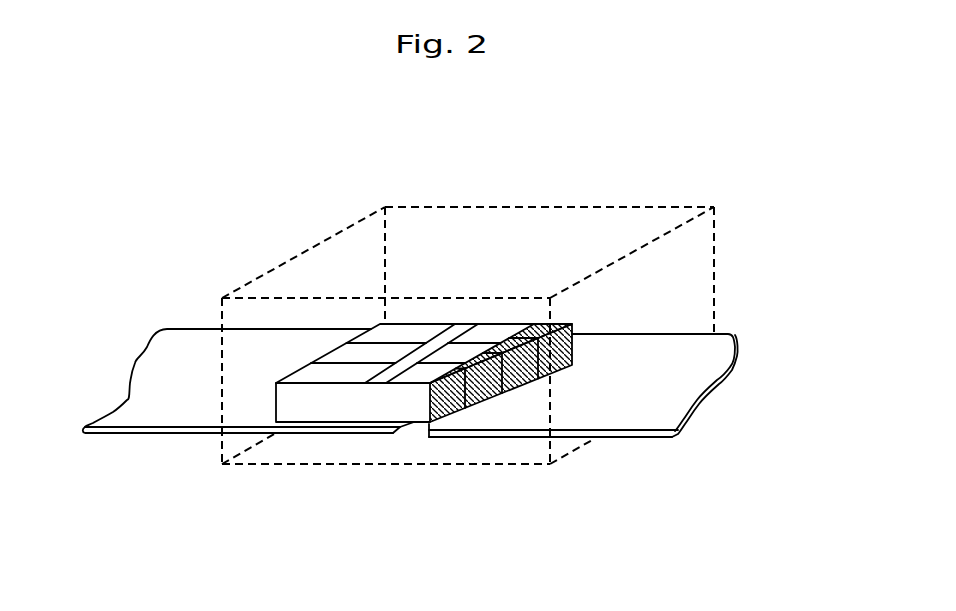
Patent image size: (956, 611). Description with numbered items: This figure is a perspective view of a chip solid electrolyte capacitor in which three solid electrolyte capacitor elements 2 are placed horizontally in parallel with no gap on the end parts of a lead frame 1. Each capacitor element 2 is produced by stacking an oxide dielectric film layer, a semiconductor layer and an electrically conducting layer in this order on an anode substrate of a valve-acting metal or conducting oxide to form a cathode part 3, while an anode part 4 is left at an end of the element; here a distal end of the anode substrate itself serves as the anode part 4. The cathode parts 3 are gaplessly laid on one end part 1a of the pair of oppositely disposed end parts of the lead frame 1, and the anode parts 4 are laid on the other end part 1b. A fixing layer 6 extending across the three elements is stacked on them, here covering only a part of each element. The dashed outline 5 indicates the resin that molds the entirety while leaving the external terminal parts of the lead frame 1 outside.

The lead frame 1 is at (405, 447).
The one end part of lead frame 1a is at (249, 445).
The other end part of lead frame 1b is at (658, 438).
The solid electrolyte capacitor element 2 is at (343, 355).
The cathode part 3 is at (383, 437).
The anode part 4 is at (565, 325).
The housing outline 5 is at (588, 232).
The fixing layer 6 is at (456, 335).